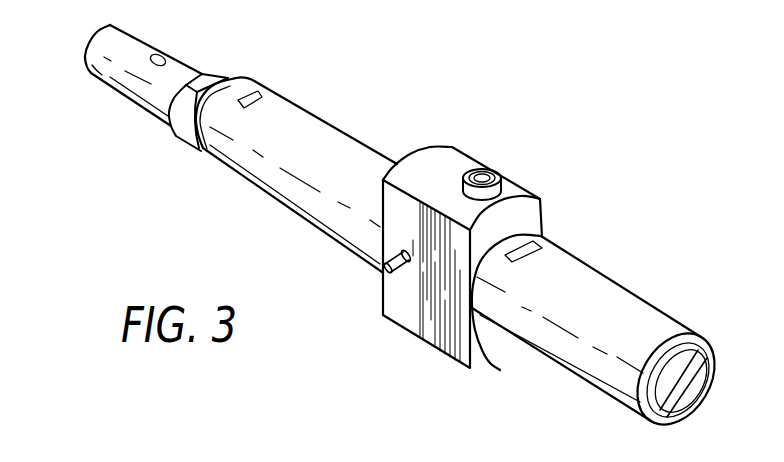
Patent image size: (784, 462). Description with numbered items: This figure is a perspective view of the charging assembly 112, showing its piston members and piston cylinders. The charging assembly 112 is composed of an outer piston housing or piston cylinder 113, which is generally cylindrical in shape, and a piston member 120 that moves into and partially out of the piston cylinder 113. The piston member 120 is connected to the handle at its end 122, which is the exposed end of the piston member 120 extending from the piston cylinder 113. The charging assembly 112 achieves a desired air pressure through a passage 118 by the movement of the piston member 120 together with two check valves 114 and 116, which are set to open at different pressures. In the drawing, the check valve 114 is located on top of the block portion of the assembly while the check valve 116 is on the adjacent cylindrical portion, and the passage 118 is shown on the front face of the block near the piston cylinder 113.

The charging assembly 112 is at (652, 151).
The piston cylinder 113 is at (364, 152).
The check valve 114 is at (479, 170).
The check valve 116 is at (483, 367).
The passage 118 is at (390, 267).
The piston member 120 is at (156, 160).
The end 122 is at (113, 69).